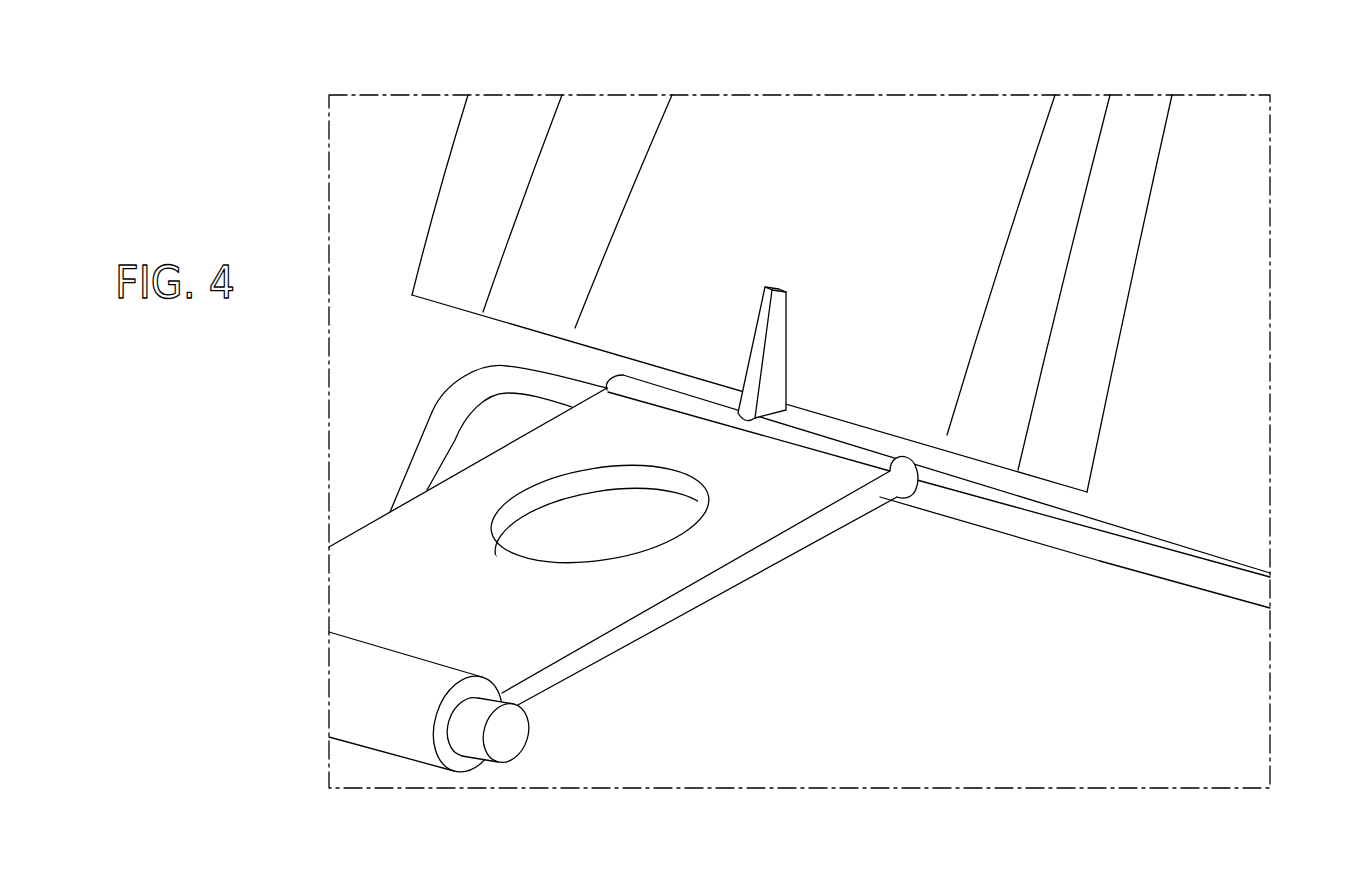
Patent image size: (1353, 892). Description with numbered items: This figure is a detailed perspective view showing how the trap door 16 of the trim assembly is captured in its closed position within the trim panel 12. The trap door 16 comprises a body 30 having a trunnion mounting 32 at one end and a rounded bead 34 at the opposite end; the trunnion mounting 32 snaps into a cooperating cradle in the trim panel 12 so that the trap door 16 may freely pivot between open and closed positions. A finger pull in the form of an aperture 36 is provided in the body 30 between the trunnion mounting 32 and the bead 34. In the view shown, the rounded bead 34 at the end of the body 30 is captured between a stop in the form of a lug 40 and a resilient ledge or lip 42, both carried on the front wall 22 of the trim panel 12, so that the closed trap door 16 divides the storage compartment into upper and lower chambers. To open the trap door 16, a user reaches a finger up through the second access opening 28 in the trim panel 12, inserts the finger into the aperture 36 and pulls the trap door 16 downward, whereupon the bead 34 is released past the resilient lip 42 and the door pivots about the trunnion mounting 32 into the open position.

The trim panel 12 is at (497, 133).
The trap door 16 is at (392, 451).
The front wall 22 is at (1087, 510).
The second access opening 28 is at (1175, 577).
The body 30 is at (567, 623).
The trunnion mounting 32 is at (357, 693).
The rounded bead 34 is at (830, 445).
The aperture 36 is at (665, 547).
The lug 40 is at (752, 357).
The resilient lip 42 is at (990, 517).